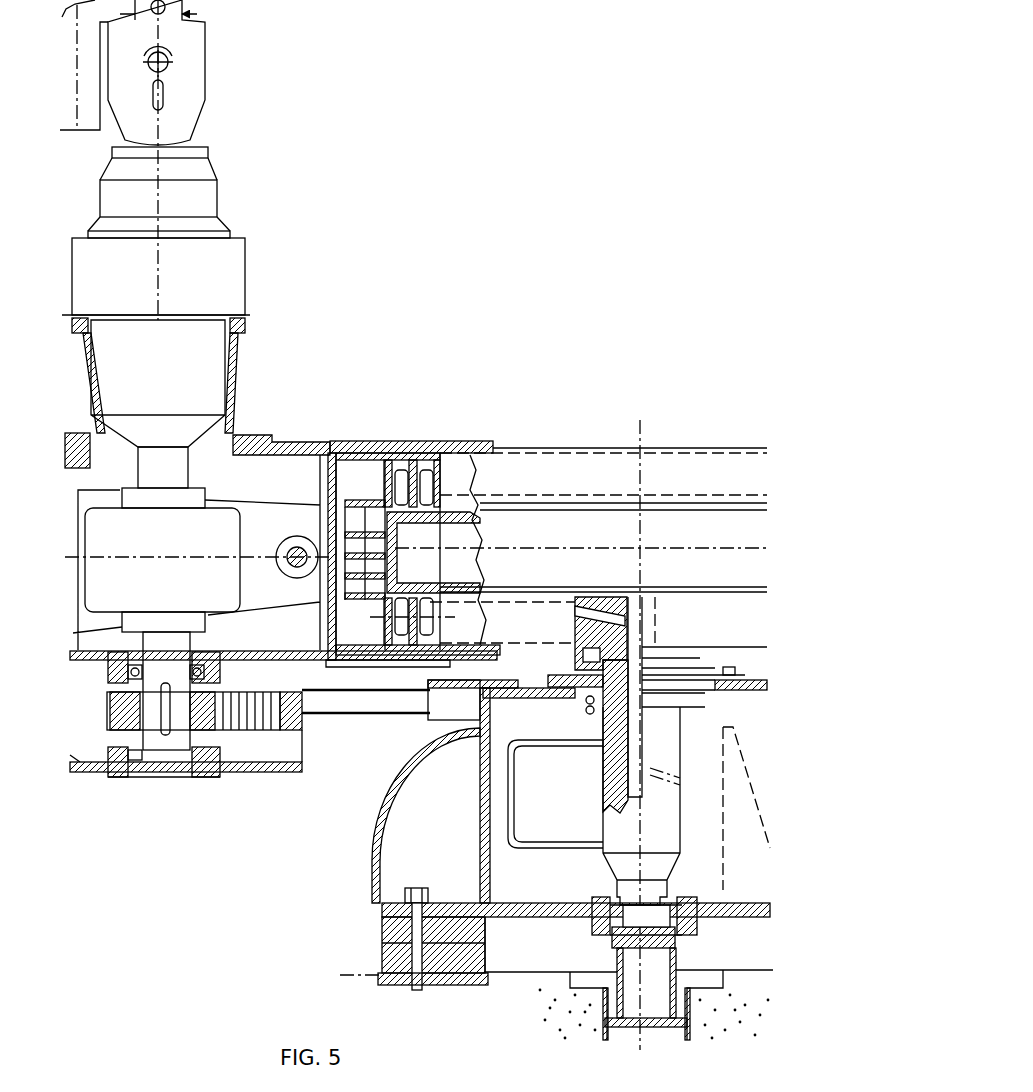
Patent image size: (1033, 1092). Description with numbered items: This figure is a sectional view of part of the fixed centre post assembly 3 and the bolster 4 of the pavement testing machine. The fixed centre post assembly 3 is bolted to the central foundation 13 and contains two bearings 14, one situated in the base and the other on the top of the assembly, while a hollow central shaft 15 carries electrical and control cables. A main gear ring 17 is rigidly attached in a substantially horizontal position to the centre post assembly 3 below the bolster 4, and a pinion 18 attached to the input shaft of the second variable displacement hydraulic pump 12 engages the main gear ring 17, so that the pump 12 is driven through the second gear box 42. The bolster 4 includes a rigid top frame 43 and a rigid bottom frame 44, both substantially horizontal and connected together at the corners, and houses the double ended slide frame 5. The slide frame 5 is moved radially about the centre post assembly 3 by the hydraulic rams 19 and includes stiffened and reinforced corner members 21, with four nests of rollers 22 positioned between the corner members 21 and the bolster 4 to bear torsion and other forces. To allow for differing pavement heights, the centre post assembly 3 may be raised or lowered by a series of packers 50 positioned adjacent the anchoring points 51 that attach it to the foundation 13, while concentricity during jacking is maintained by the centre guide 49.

The fixed centre post assembly 3 is at (716, 780).
The bolster 4 is at (564, 445).
The slide frame 5 is at (449, 490).
The second variable displacement hydraulic pump 12 is at (218, 190).
The central foundation 13 is at (543, 1024).
The bearings 14 is at (578, 705).
The central shaft 15 is at (600, 845).
The main gear ring 17 is at (284, 729).
The pinion 18 is at (268, 729).
The hydraulic rams 19 is at (294, 533).
The corner members 21 is at (456, 521).
The rollers 22 is at (424, 470).
The second gear box 42 is at (250, 290).
The top frame 43 is at (622, 470).
The bottom frame 44 is at (711, 608).
The centre guide 49 is at (633, 990).
The packers 50 is at (378, 958).
The anchoring points 51 is at (400, 893).